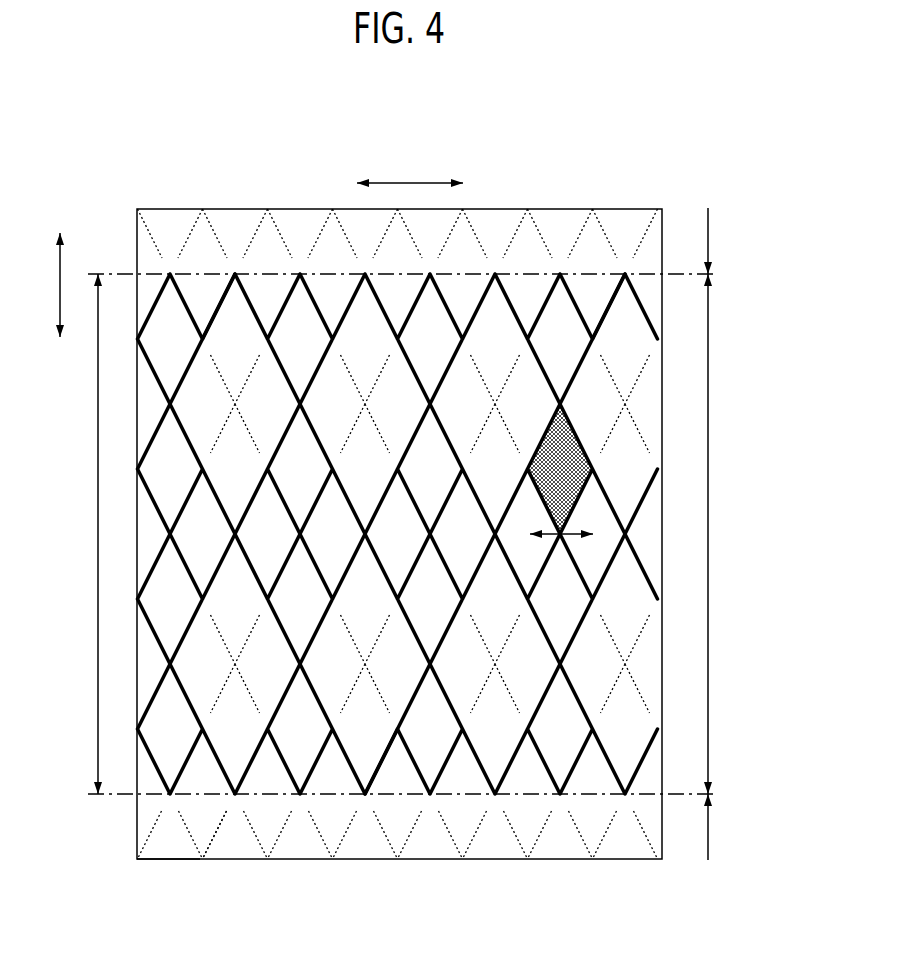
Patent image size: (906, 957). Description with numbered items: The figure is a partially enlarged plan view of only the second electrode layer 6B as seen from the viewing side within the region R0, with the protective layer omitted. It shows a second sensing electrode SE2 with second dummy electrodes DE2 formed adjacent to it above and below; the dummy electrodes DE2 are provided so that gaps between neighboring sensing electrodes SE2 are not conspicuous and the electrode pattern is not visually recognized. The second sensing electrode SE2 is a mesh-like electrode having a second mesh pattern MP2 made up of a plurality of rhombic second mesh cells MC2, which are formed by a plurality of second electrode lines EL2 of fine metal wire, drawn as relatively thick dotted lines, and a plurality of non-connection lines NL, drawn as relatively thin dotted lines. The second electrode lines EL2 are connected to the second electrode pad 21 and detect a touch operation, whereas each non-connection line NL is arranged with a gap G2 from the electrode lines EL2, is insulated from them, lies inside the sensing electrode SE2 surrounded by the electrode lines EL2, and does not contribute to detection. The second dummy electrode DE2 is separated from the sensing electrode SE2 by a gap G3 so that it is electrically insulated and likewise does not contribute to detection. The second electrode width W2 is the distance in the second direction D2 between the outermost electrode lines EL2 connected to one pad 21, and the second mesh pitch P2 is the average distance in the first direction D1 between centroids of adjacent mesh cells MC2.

The second electrode pad 21 is at (238, 268).
The first direction D1 is at (410, 164).
The second direction D2 is at (39, 285).
The second electrode layer 6B is at (565, 222).
The second dummy electrode DE2 is at (735, 534).
The second electrode line EL2 is at (612, 309).
The second mesh cell MC2 is at (570, 452).
The second electrode width W2 is at (78, 534).
The second sensing electrode SE2 is at (735, 534).
The second mesh pitch P2 is at (578, 540).
The non-connection line NL is at (638, 692).
The second mesh pattern MP2 is at (650, 755).
The region R0 is at (157, 862).
The gap G3 is at (240, 808).
The gap G2 is at (392, 722).